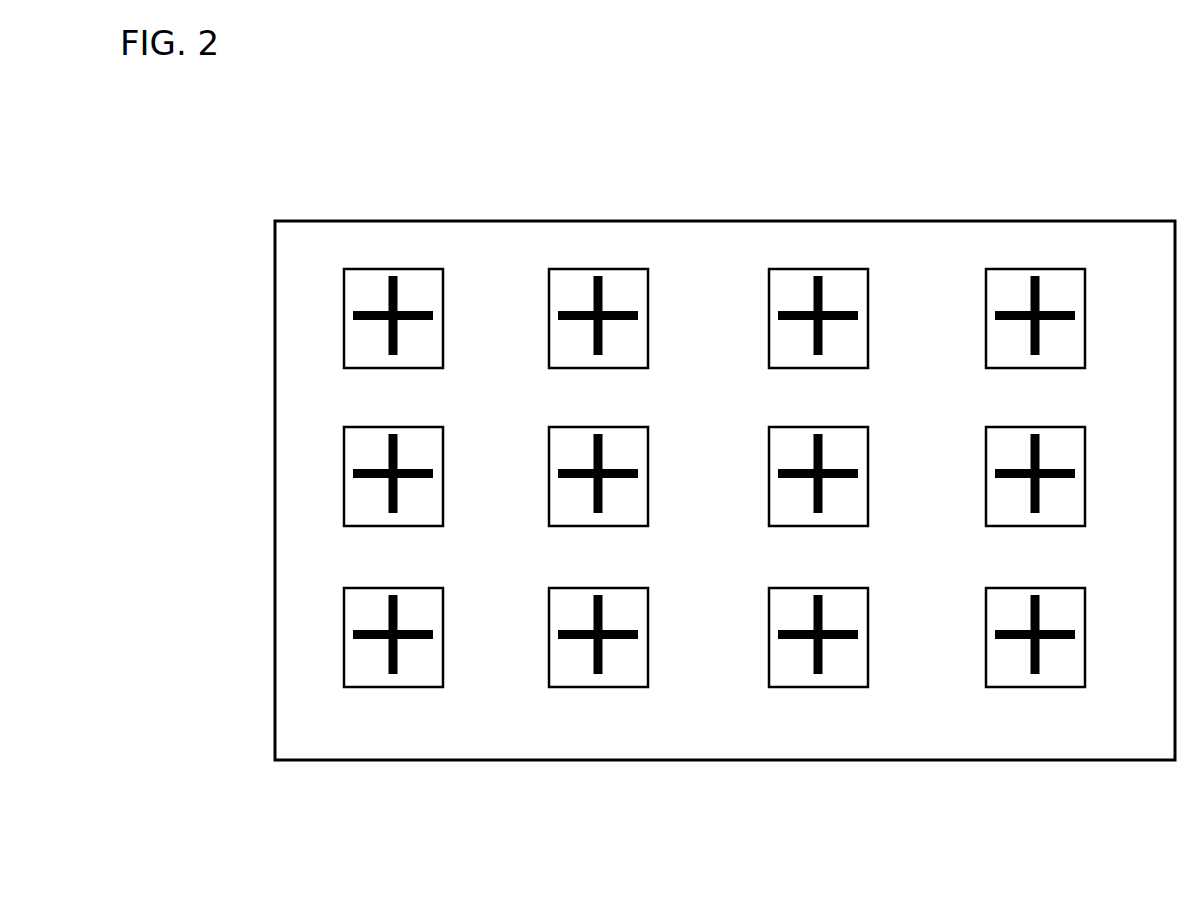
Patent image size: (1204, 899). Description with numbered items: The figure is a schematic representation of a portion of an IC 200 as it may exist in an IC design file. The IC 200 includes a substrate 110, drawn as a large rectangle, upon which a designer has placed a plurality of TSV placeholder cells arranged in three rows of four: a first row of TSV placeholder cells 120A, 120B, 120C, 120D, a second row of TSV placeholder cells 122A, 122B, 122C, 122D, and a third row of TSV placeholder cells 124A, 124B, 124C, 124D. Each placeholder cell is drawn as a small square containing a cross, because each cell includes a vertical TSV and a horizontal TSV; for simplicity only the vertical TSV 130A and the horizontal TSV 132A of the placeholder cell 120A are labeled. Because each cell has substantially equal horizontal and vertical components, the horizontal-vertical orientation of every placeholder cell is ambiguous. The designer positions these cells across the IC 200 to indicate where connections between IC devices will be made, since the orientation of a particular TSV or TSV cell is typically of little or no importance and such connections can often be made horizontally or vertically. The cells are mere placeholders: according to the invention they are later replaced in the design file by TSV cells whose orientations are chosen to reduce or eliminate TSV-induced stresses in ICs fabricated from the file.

The IC 200 is at (703, 139).
The substrate 110 is at (320, 235).
The TSV placeholder cell 120A is at (393, 269).
The TSV placeholder cell 120B is at (584, 269).
The TSV placeholder cell 120C is at (818, 269).
The TSV placeholder cell 120D is at (1034, 269).
The TSV placeholder cell 122A is at (352, 476).
The TSV placeholder cell 122B is at (549, 455).
The TSV placeholder cell 122C is at (769, 455).
The TSV placeholder cell 122D is at (986, 455).
The TSV placeholder cell 124A is at (352, 636).
The TSV placeholder cell 124B is at (609, 687).
The TSV placeholder cell 124C is at (818, 687).
The TSV placeholder cell 124D is at (1024, 687).
The vertical TSV 130A is at (390, 292).
The horizontal TSV 132A is at (352, 316).